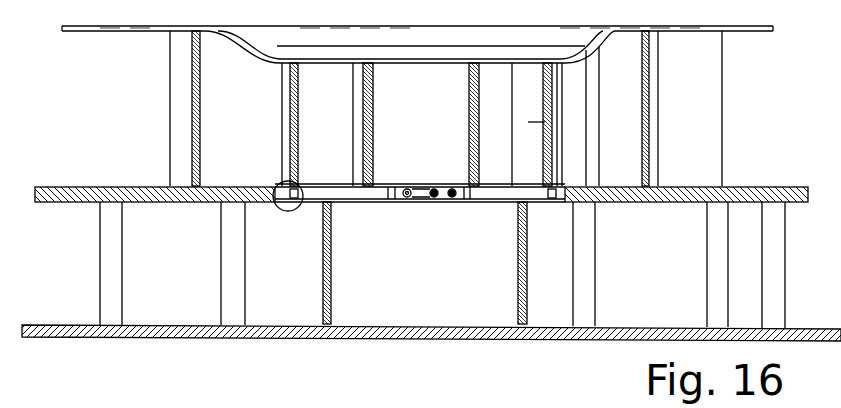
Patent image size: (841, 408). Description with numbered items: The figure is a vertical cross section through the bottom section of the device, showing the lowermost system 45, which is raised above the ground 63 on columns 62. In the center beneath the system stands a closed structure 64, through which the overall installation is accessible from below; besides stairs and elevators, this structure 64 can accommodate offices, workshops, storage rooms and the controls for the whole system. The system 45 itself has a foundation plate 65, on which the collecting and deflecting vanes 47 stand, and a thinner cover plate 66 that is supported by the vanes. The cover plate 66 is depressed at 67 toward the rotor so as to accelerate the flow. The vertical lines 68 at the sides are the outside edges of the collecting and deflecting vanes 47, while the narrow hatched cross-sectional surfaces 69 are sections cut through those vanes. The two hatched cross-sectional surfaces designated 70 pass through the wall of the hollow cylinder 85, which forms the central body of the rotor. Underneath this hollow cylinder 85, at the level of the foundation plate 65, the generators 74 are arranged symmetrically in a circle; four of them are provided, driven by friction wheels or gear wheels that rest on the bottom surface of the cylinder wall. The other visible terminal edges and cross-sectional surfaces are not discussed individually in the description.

The lowermost system 45 is at (80, 97).
The collecting and deflecting vanes 47 is at (705, 90).
The columns 62 is at (113, 264).
The ground 63 is at (518, 336).
The closed structure 64 is at (480, 299).
The foundation plate 65 is at (176, 200).
The cover plate 66 is at (735, 32).
The depression of the cover plate 67 is at (244, 55).
The outside edges of the collecting and deflecting vanes 68 is at (170, 132).
The narrow cross-sectional surfaces 69 is at (192, 88).
The cross-sectional surfaces of the hollow cylinder wall 70 is at (469, 93).
The generators 74 is at (435, 202).
The hollow cylinder 85 is at (443, 155).